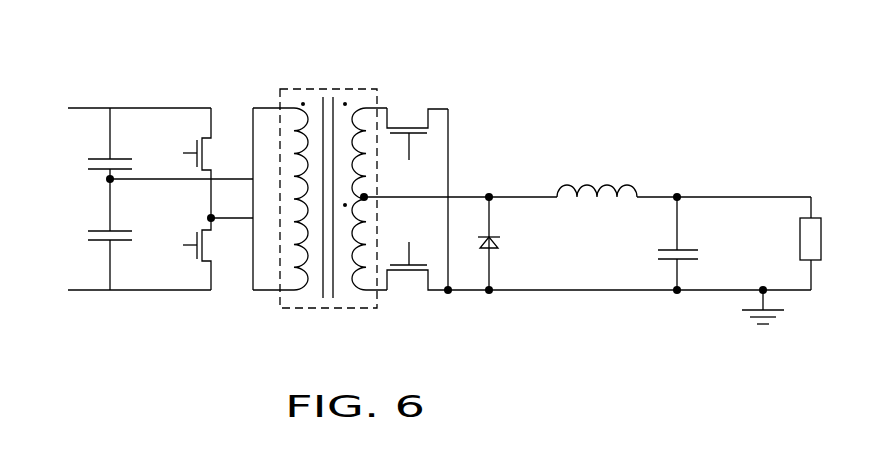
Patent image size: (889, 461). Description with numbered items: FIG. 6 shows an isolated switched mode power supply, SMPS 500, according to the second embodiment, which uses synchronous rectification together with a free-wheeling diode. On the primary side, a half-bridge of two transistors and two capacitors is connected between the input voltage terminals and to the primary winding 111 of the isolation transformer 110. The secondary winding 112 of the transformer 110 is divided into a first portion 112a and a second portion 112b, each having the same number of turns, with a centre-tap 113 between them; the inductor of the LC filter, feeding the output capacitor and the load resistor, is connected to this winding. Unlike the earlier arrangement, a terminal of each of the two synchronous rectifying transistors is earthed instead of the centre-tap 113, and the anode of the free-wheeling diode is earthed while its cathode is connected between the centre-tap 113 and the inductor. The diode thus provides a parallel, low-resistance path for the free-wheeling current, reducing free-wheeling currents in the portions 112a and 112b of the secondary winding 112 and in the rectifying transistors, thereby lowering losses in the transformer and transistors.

The isolation transformer 110 is at (323, 89).
The primary winding 111 is at (297, 296).
The secondary winding 112 is at (352, 296).
The first portion of the secondary winding 112a is at (357, 154).
The second portion of the secondary winding 112b is at (354, 237).
The centre-tap 113 is at (371, 198).
The isolated SMPS 500 is at (637, 111).